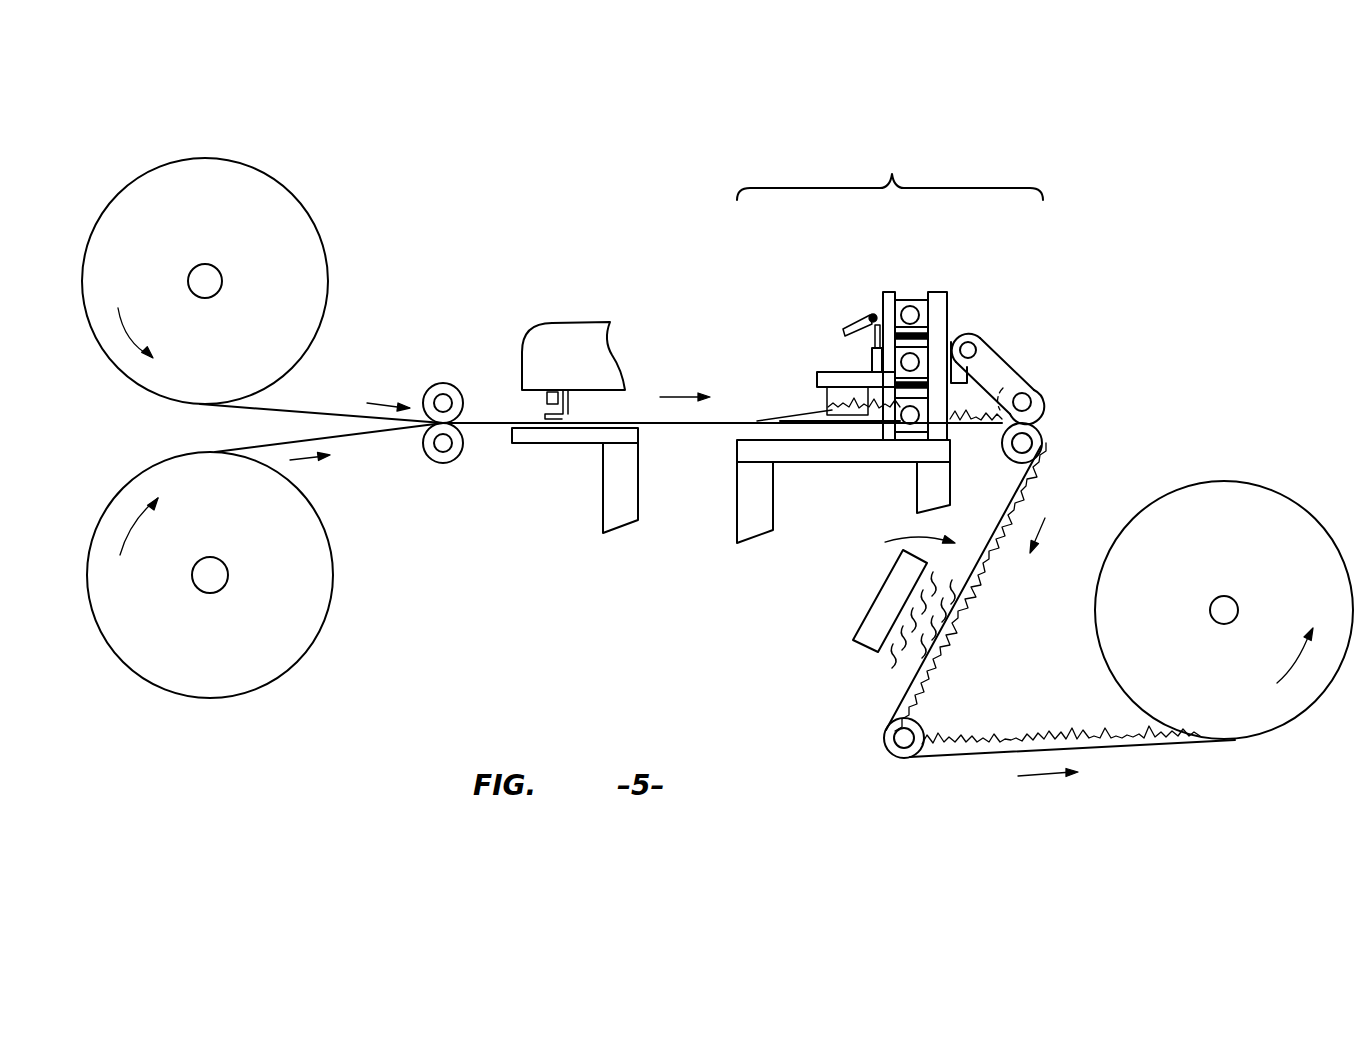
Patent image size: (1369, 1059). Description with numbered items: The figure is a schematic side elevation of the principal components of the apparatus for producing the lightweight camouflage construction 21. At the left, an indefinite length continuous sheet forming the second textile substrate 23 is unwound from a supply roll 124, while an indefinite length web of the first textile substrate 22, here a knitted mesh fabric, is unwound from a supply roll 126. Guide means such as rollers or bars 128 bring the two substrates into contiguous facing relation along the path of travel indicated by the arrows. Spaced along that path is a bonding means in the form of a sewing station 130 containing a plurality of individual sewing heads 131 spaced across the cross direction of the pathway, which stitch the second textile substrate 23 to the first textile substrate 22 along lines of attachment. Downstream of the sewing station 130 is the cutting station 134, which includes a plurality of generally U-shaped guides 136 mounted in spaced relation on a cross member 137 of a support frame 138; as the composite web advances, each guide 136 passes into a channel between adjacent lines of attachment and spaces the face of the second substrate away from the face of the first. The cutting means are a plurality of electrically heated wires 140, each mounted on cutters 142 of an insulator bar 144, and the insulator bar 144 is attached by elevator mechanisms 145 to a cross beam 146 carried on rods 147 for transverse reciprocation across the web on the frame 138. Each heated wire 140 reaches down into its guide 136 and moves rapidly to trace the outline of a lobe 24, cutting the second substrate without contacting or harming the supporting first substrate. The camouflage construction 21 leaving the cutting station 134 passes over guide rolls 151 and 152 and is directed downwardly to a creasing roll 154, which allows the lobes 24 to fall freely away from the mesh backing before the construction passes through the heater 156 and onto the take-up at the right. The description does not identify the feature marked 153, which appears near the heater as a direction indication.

The camouflage construction 21 is at (1052, 469).
The first textile substrate 22 is at (343, 437).
The second textile substrate 23 is at (283, 407).
The lobe 24 is at (977, 588).
The supply roll 124 is at (290, 195).
The supply roll 126 is at (295, 665).
The guide means (rollers or bars) 128 is at (443, 380).
The sewing station 130 is at (565, 323).
The sewing heads 131 is at (545, 417).
The cutting station 134 is at (890, 168).
The U-shaped guides 136 is at (808, 400).
The cross member 137 is at (912, 447).
The support frame 138 is at (955, 390).
The electrically heated wires 140 is at (817, 412).
The cutters 142 is at (818, 374).
The insulator bar 144 is at (840, 362).
The elevator mechanisms 145 is at (868, 307).
The cross beam 146 is at (890, 290).
The rods 147 is at (910, 303).
The guide roll 151 is at (1040, 387).
The guide roll 152 is at (1042, 437).
The direction of travel 153 is at (893, 541).
The creasing roll 154 is at (884, 743).
The heater 156 is at (866, 606).